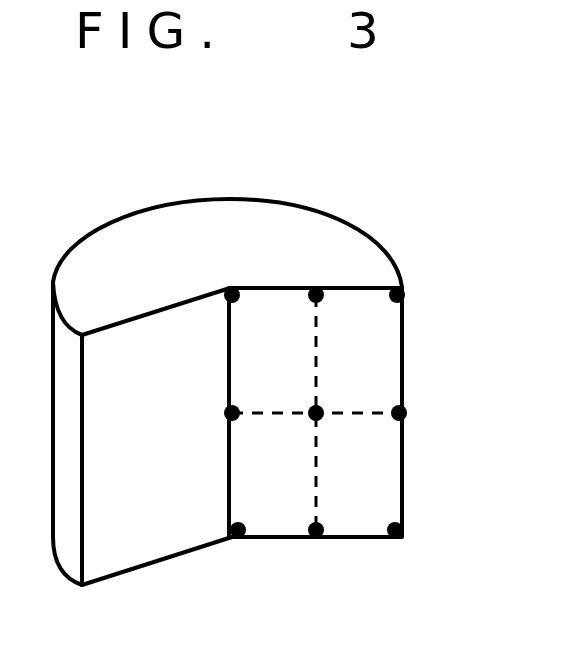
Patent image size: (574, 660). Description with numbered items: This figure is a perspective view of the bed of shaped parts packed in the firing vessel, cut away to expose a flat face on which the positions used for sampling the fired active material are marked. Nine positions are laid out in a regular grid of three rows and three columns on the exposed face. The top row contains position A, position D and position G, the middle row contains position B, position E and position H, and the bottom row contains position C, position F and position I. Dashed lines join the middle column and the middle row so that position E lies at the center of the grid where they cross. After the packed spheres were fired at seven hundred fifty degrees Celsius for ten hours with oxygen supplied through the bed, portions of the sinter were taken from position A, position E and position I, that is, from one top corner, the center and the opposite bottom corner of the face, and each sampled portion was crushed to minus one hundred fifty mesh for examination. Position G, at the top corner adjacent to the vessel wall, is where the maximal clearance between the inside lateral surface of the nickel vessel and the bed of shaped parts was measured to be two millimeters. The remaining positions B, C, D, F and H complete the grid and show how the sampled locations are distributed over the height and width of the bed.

The sampling position A is at (238, 273).
The sampling position B is at (243, 390).
The sampling position C is at (247, 509).
The sampling position D is at (324, 273).
The sampling position E is at (328, 390).
The sampling position F is at (327, 509).
The sampling position G is at (411, 273).
The sampling position H is at (415, 390).
The sampling position I is at (404, 509).